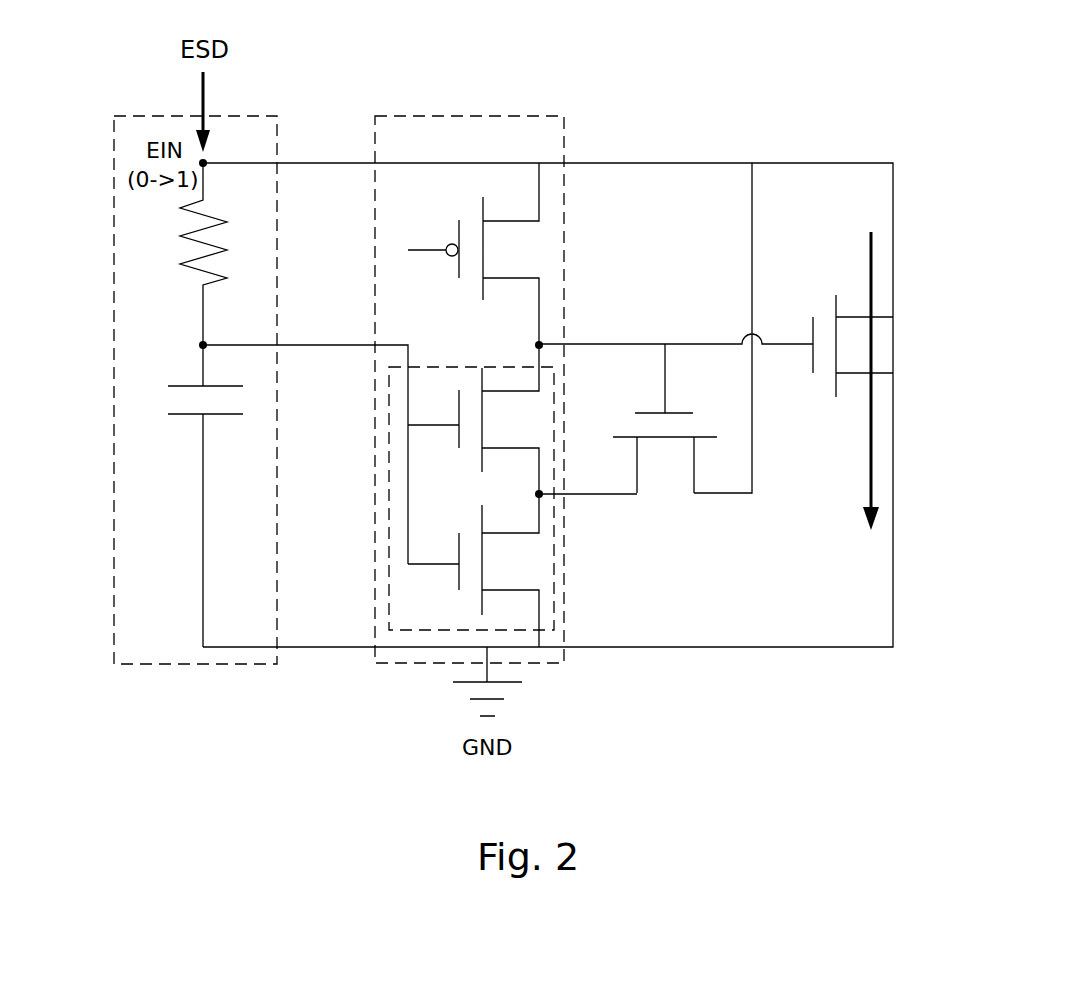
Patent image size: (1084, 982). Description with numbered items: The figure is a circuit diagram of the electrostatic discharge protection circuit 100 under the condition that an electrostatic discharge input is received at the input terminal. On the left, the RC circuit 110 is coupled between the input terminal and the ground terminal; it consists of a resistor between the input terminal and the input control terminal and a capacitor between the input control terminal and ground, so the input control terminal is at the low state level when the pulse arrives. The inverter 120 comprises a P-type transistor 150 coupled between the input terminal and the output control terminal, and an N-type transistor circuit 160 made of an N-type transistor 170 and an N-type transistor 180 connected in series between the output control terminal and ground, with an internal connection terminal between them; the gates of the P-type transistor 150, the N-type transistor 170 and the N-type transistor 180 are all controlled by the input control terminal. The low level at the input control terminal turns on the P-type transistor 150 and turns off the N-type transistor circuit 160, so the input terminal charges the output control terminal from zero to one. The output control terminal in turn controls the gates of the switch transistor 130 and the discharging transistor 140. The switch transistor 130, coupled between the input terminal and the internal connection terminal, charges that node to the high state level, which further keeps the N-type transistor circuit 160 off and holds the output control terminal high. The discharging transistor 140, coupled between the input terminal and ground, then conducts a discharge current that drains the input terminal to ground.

The electrostatic discharge protection circuit 100 is at (910, 33).
The RC circuit 110 is at (114, 143).
The inverter 120 is at (473, 381).
The switch transistor 130 is at (668, 504).
The discharging transistor 140 is at (897, 334).
The P-type transistor 150 is at (534, 252).
The N-type transistor circuit 160 is at (473, 496).
The N-type transistor 170 is at (530, 416).
The N-type transistor 180 is at (530, 564).